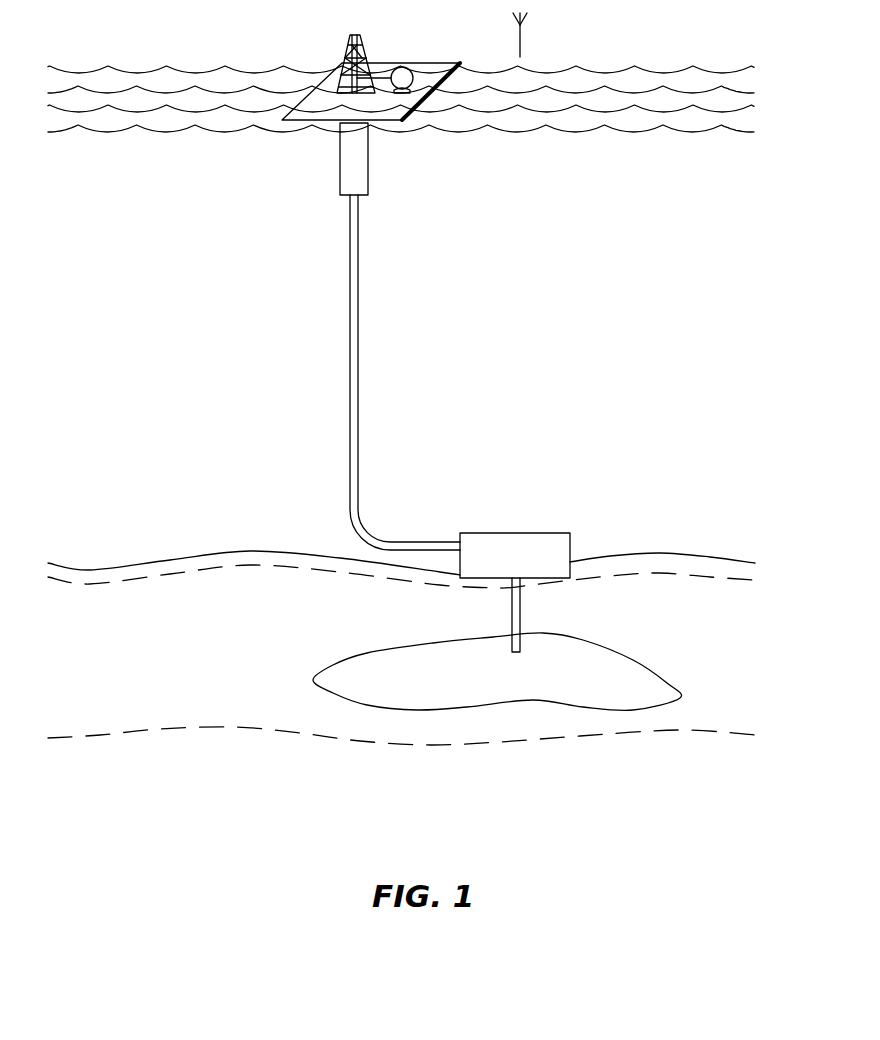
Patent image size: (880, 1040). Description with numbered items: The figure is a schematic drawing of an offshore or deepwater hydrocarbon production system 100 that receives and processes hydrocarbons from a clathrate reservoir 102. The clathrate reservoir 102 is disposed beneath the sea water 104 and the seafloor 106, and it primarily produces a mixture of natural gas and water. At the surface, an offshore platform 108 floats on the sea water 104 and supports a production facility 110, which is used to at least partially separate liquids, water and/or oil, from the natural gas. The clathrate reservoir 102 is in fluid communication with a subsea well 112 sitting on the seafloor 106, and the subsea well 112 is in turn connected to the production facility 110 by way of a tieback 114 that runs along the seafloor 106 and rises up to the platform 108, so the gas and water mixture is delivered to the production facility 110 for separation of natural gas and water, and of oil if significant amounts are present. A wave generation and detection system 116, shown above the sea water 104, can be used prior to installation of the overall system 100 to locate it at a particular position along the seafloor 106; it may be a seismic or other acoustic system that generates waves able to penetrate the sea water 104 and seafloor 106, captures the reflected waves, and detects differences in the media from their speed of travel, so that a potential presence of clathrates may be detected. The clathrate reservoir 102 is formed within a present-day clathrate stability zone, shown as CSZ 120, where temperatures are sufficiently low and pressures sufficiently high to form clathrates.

The offshore hydrocarbon production system 100 is at (140, 794).
The clathrate reservoir 102 is at (531, 644).
The sea water 104 is at (657, 232).
The seafloor 106 is at (414, 555).
The offshore platform 108 is at (398, 129).
The production facility 110 is at (400, 62).
The subsea well 112 is at (544, 539).
The tieback 114 is at (419, 372).
The wave generation and detection system 116 is at (575, 35).
The clathrate stability zone (CSZ) 120 is at (167, 675).